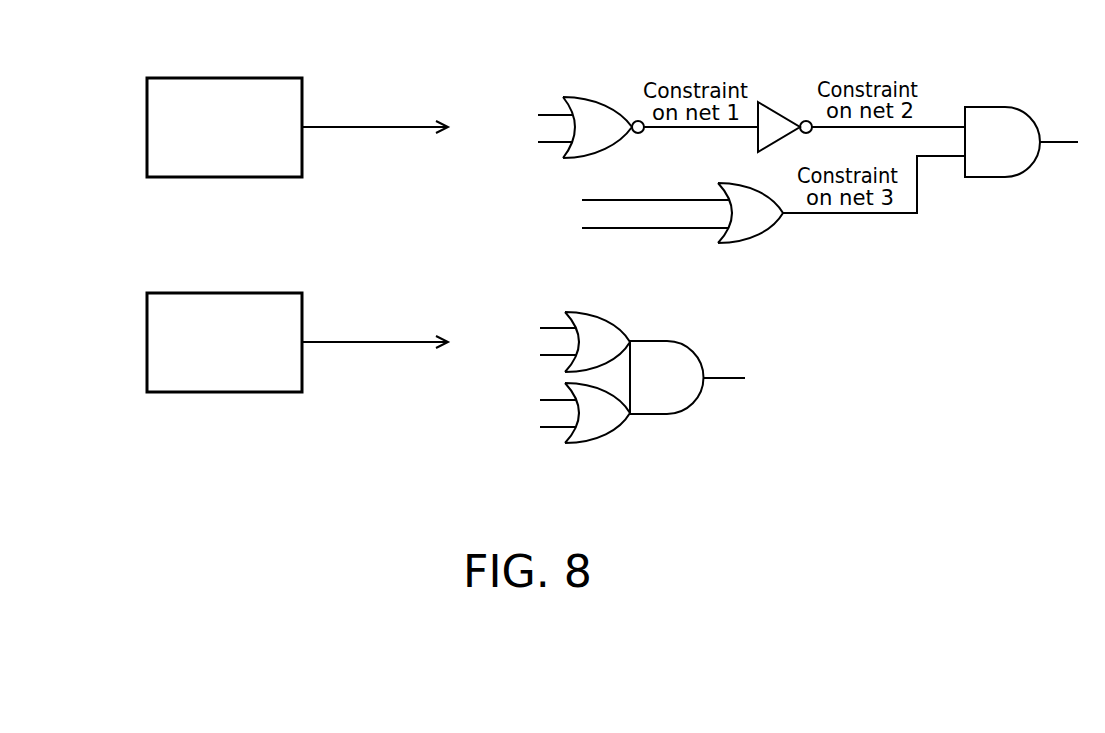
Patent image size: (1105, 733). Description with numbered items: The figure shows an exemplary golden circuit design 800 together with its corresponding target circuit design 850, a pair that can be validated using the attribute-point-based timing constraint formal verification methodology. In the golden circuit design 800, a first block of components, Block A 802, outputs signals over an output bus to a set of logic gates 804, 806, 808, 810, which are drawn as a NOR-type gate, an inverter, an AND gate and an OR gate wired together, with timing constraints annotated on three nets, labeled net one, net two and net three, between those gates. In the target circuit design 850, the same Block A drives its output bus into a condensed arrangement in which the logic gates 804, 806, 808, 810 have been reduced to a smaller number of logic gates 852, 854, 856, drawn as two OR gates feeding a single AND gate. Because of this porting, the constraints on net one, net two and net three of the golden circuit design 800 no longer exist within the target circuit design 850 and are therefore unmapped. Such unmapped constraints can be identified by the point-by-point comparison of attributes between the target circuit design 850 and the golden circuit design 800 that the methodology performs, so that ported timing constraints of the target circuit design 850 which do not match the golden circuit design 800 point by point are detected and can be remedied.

The golden circuit design 800 is at (123, 50).
The Block A 802 is at (225, 78).
The logic gate 804 is at (598, 97).
The logic gate 806 is at (783, 110).
The logic gate 808 is at (1003, 107).
The logic gate 810 is at (763, 237).
The target circuit design 850 is at (123, 265).
The logic gate 852 is at (598, 317).
The logic gate 854 is at (680, 341).
The logic gate 856 is at (614, 432).